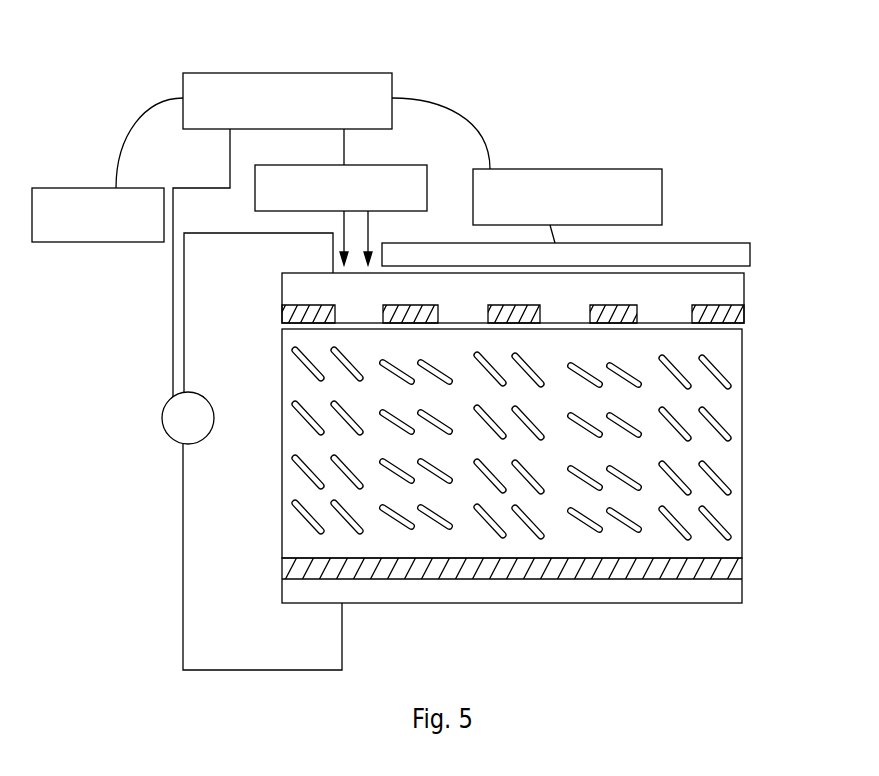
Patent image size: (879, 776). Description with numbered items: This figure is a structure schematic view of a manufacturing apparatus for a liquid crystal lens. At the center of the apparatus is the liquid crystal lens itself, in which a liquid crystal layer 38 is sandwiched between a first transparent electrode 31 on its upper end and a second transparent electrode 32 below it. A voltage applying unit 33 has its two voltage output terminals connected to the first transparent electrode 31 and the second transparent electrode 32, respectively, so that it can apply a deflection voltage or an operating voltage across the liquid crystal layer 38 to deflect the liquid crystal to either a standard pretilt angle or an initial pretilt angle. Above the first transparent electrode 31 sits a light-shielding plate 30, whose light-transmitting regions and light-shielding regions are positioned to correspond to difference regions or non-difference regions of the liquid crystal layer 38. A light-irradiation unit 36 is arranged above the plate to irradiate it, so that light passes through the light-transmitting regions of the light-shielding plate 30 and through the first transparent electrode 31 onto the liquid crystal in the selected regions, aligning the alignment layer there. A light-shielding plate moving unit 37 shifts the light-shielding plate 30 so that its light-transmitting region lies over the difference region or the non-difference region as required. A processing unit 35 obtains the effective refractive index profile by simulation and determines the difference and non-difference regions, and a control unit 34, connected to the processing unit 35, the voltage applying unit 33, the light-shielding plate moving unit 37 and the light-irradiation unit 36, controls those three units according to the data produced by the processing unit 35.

The light-shielding plate 30 is at (737, 243).
The first transparent electrode 31 is at (744, 288).
The second transparent electrode 32 is at (735, 603).
The voltage applying unit 33 is at (162, 420).
The control unit 34 is at (352, 73).
The processing unit 35 is at (80, 188).
The light-irradiation unit 36 is at (390, 211).
The light-shielding plate moving unit 37 is at (635, 169).
The liquid crystal layer 38 is at (742, 428).